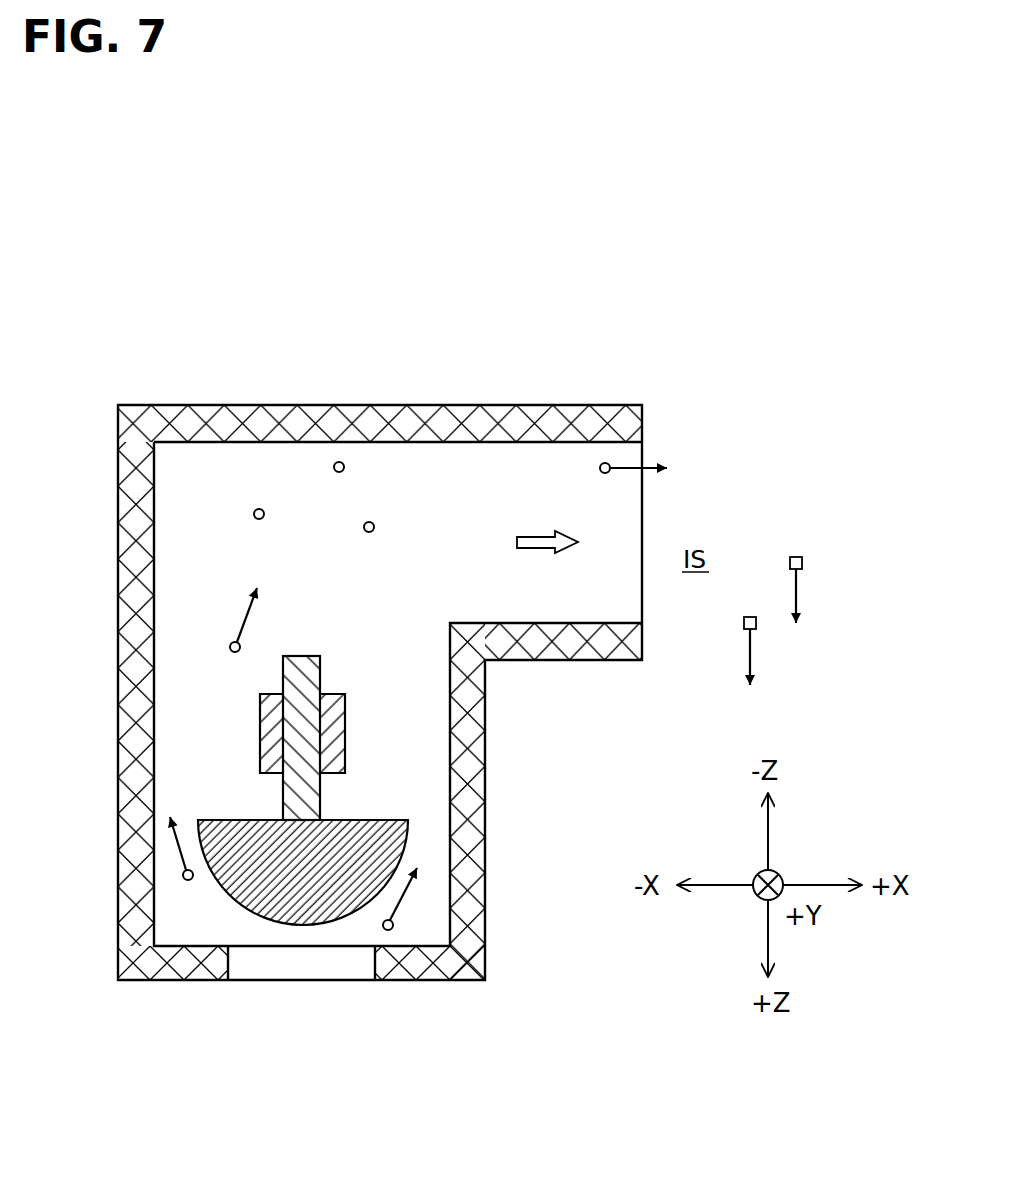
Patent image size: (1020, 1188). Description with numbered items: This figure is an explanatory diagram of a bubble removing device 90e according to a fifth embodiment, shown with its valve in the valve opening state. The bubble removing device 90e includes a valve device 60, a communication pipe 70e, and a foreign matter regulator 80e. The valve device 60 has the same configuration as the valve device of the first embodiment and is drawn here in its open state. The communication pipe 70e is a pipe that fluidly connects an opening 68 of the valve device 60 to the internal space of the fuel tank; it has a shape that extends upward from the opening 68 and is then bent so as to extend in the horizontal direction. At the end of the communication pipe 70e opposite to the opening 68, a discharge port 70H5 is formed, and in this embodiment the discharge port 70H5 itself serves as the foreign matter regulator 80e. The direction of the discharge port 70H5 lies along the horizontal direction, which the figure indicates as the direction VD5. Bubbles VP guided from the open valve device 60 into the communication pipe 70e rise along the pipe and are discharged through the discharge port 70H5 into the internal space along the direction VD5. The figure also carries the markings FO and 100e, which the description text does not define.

The liquid ejecting apparatus / ventilation unit 100e is at (434, 692).
The communication pipe 70e is at (153, 603).
The discharge port 70H5 is at (701, 590).
The foreign matter regulator 80e is at (642, 592).
The bubble removing device 90e is at (672, 497).
The valve device 60 is at (362, 722).
The opening 68 is at (232, 964).
The bubbles VP is at (230, 647).
The direction of the discharge port VD5 is at (519, 542).
The outside air flow FO is at (748, 616).